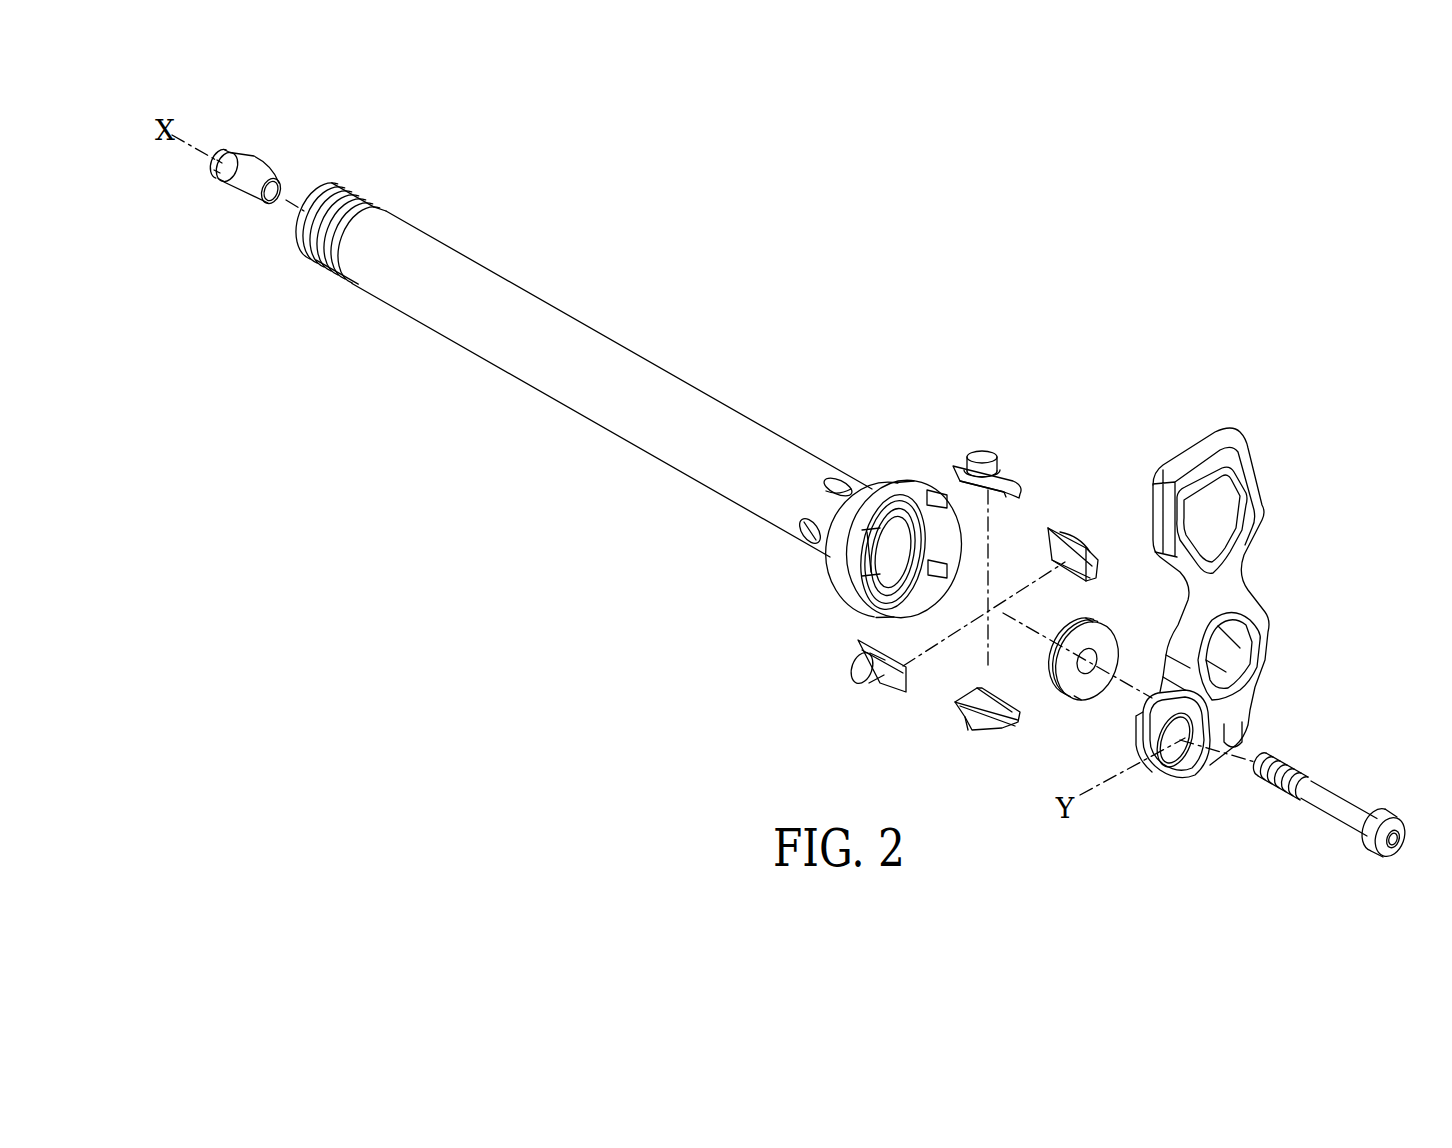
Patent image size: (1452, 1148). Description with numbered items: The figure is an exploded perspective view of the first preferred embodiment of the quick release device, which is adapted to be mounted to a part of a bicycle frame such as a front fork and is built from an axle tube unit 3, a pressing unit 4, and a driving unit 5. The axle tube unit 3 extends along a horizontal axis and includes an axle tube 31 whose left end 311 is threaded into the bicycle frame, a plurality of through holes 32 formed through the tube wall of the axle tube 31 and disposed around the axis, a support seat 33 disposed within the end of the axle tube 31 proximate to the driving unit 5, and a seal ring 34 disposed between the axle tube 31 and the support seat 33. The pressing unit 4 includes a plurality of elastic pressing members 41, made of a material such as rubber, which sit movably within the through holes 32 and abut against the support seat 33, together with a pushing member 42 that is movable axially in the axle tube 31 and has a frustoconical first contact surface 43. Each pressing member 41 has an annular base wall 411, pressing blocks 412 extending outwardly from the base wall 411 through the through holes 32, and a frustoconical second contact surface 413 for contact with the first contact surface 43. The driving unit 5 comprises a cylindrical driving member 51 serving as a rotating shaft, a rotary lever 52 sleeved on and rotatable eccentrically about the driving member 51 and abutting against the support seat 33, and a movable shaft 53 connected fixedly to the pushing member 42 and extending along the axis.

The axle tube unit 3 is at (614, 401).
The axle tube 31 is at (638, 371).
The left end 311 is at (304, 258).
The through holes 32 is at (838, 478).
The support seat 33 is at (1084, 686).
The seal ring 34 is at (1050, 690).
The pressing unit 4 is at (981, 563).
The pressing members 41 is at (982, 455).
The annular base wall 411 is at (941, 740).
The pressing blocks 412 is at (928, 733).
The second contact surface 413 is at (975, 690).
The pushing member 42 is at (258, 222).
The first contact surface 43 is at (255, 167).
The driving unit 5 is at (1273, 667).
The driving member 51 is at (1180, 755).
The rotary lever 52 is at (1254, 729).
The movable shaft 53 is at (1355, 826).